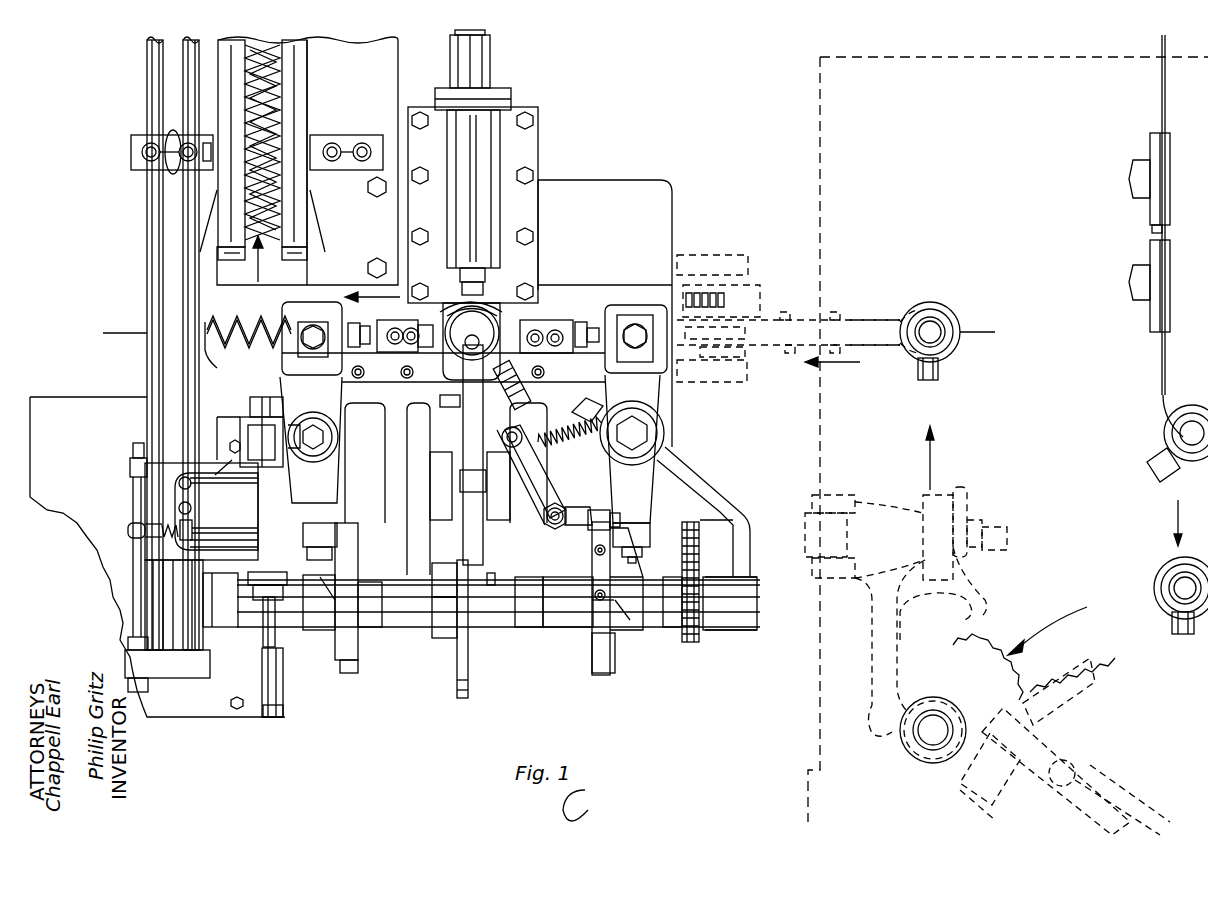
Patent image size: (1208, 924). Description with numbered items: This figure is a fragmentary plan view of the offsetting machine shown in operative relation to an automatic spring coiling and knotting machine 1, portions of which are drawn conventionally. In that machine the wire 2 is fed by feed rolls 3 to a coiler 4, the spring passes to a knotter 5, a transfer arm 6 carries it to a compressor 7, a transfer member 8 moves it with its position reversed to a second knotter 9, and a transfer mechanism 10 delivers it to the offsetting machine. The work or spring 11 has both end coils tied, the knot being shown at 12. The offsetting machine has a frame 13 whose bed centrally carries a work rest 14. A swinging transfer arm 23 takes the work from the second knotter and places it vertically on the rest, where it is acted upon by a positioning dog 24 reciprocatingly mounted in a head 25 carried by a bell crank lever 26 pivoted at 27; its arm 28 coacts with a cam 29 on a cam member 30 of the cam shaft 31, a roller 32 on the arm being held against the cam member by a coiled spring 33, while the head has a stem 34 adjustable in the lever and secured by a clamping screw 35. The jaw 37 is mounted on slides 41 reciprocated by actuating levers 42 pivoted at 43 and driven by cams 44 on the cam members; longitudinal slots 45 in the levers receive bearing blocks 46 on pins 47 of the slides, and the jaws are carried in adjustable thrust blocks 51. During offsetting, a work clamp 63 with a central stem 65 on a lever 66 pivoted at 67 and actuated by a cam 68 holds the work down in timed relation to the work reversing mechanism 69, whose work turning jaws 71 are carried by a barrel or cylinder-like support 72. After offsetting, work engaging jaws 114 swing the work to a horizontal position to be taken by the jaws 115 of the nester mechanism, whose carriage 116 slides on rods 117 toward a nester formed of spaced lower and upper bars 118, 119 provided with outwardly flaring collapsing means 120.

The automatic spring coiling and knotting machine 1 is at (820, 118).
The wire 2 is at (1163, 94).
The feed rolls 3 is at (455, 34).
The coiler 4 is at (445, 87).
The knotter 5 is at (1178, 630).
The transfer arm 6 is at (1060, 760).
The compressor 7 is at (915, 762).
The transfer member 8 is at (900, 640).
The knotter 9 is at (918, 372).
The transfer mechanism 10 is at (460, 258).
The work or spring 11 is at (945, 282).
The knot 12 is at (103, 335).
The frame 13 is at (602, 190).
The work rest 14 is at (445, 395).
The swinging transfer arm 23 is at (880, 320).
The positioning dog 24 is at (520, 380).
The head 25 is at (525, 407).
The bell crank lever 26 is at (540, 480).
The pivot 27 is at (562, 505).
The arm 28 is at (580, 522).
The cam 29 is at (590, 605).
The cam member 30 is at (352, 668).
The cam shaft 31 is at (500, 610).
The roller 32 is at (600, 512).
The coiled spring 33 is at (590, 412).
The stem 34 is at (528, 420).
The clamping screw 35 is at (522, 438).
The jaw 37 is at (370, 285).
The slides 41 is at (360, 347).
The actuating levers 42 is at (337, 405).
The pivot 43 is at (323, 440).
The cams 44 is at (325, 655).
The longitudinal slots 45 is at (315, 322).
The bearing blocks 46 is at (325, 325).
The pins 47 is at (320, 330).
The jaw supporting or thrust blocks 51 is at (384, 320).
The work clamp 63 is at (455, 312).
The central stem 65 is at (492, 312).
The lever 66 is at (470, 425).
The pivot 67 is at (430, 500).
The cam 68 is at (457, 660).
The work reversing mechanism 69 is at (500, 158).
The work turning jaws 71 is at (478, 262).
The barrel or cylinder-like support 72 is at (483, 197).
The work engaging jaws 114 is at (250, 350).
The jaws 115 is at (250, 387).
The carriage 116 is at (160, 500).
The rods 117 is at (190, 428).
The lower bar 118 is at (290, 258).
The upper bar 119 is at (235, 212).
The outwardly flaring collapsing means 120 is at (300, 220).